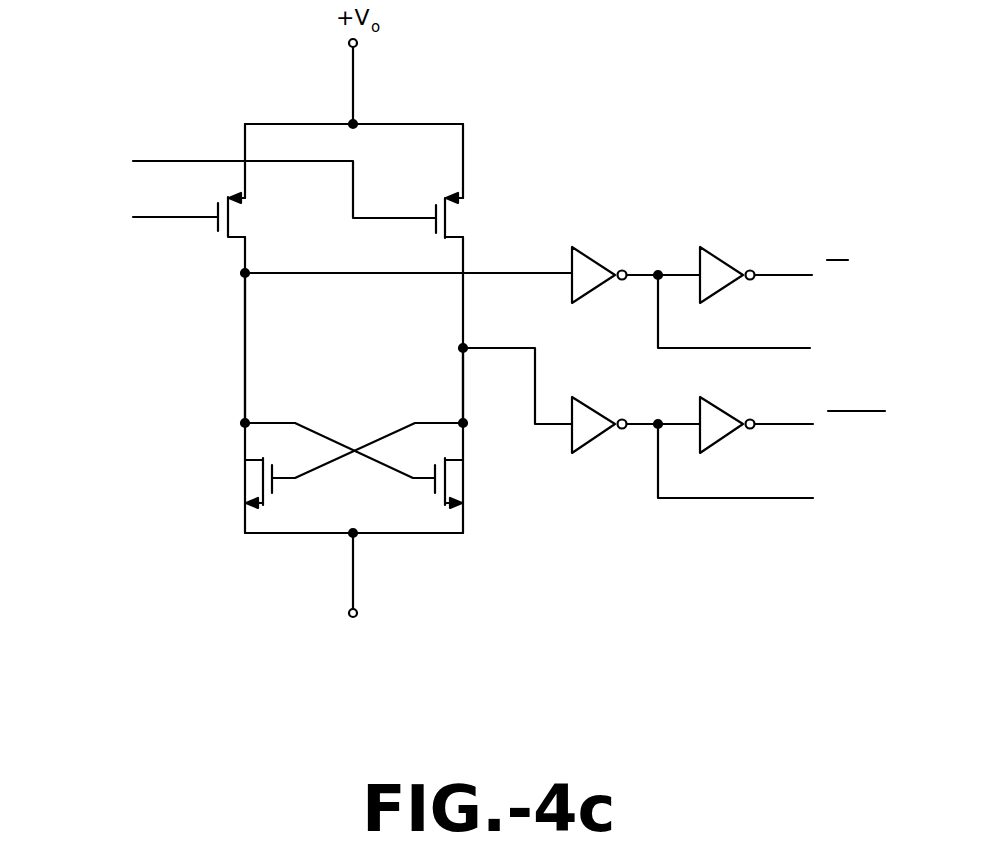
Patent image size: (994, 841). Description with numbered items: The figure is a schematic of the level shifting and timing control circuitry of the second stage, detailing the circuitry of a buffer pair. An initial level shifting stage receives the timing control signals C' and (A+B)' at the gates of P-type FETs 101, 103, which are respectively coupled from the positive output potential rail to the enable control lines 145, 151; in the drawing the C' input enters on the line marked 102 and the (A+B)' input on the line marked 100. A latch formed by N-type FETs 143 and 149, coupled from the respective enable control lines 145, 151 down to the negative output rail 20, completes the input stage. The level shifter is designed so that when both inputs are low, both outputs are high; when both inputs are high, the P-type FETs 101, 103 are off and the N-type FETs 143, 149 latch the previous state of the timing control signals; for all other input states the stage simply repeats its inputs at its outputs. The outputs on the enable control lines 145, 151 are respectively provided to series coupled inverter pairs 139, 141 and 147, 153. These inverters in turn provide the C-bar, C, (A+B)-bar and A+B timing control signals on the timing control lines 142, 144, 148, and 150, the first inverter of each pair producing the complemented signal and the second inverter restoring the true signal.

The negative output rail 20 is at (353, 580).
The (A+B)' input line 100 is at (193, 161).
The P-type FET 101 is at (240, 217).
The C' input line 102 is at (193, 217).
The P-type FET 103 is at (455, 222).
The inverter 139 is at (595, 270).
The inverter 141 is at (718, 270).
The timing control line 142 is at (767, 277).
The N-type FET 143 is at (253, 484).
The timing control line 144 is at (713, 350).
The enable control line 145 is at (245, 362).
The inverter 147 is at (585, 432).
The timing control line 148 is at (768, 427).
The N-type FET 149 is at (455, 480).
The timing control line 150 is at (720, 498).
The enable control line 151 is at (463, 377).
The inverter 153 is at (707, 447).